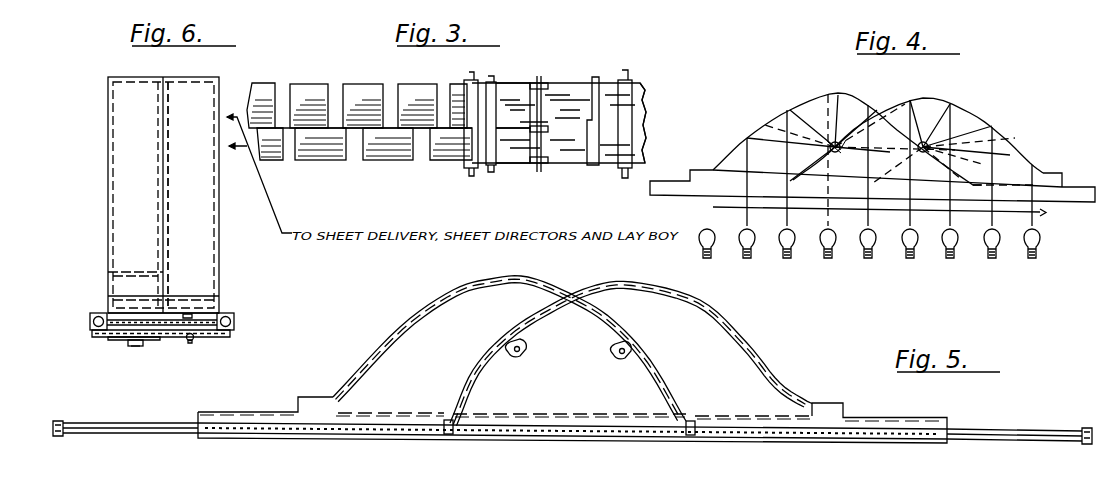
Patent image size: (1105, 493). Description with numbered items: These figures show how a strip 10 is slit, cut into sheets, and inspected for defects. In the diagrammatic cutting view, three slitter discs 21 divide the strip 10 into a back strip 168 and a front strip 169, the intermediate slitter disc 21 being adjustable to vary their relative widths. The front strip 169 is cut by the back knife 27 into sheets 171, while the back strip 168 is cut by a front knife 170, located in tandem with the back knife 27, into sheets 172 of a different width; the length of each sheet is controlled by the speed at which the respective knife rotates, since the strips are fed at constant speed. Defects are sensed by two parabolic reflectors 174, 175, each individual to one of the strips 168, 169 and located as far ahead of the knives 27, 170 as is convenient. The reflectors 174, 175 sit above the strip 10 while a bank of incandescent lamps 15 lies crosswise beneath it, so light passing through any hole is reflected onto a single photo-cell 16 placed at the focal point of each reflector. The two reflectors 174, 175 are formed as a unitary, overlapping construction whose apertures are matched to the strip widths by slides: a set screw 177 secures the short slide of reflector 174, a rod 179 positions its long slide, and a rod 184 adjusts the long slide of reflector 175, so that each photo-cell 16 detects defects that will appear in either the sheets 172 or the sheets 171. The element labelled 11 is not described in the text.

In FIG. 3, the strip 10 is at (574, 86).
In FIG. 4, the strip 10 is at (1044, 213).
In FIG. 3, the frame end 11 is at (636, 80).
In FIG. 4, the incandescent lamps 15 is at (780, 248).
In FIG. 4, the photo-cell 16 is at (838, 152).
In FIG. 5, the photo-cell 16 is at (525, 355).
In FIG. 3, the slitter discs 21 is at (546, 86).
In FIG. 3, the back knife 27 is at (490, 160).
In FIG. 3, the back strip 168 is at (513, 88).
In FIG. 3, the front strip 169 is at (525, 158).
In FIG. 3, the front knife 170 is at (474, 85).
In FIG. 3, the sheets 171 is at (308, 152).
In FIG. 3, the sheets 172 is at (300, 78).
In FIG. 6, the parabolic reflector 174 is at (120, 133).
In FIG. 3, the parabolic reflector 174 is at (604, 82).
In FIG. 4, the parabolic reflector 174 is at (778, 112).
In FIG. 5, the parabolic reflector 174 is at (457, 310).
In FIG. 6, the parabolic reflector 175 is at (208, 258).
In FIG. 3, the parabolic reflector 175 is at (592, 166).
In FIG. 4, the parabolic reflector 175 is at (1005, 142).
In FIG. 5, the parabolic reflector 175 is at (752, 340).
In FIG. 6, the set screw 177 is at (136, 346).
In FIG. 5, the rod 179 is at (1040, 442).
In FIG. 6, the rod 184 is at (193, 339).
In FIG. 5, the rod 184 is at (125, 438).